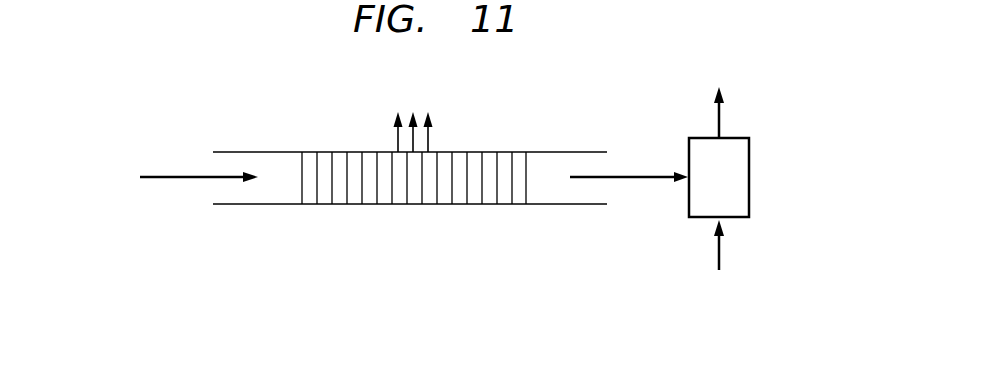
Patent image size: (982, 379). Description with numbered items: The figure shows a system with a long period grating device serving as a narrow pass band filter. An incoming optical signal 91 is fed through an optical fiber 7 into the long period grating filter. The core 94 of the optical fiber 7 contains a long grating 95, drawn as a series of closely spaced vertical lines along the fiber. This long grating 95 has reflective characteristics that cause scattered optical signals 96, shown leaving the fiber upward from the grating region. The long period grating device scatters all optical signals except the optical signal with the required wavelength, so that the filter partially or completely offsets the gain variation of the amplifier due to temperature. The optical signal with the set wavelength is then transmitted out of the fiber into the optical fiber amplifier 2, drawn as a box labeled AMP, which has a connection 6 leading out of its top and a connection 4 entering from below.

The optical fiber 7 is at (258, 136).
The core 94 is at (258, 205).
The long grating 95 is at (408, 205).
The incoming optical signal 91 is at (168, 176).
The scattered optical signals 96 is at (388, 99).
The optical fiber amplifier 2 is at (750, 177).
The amplifier output 6 is at (722, 116).
The pump light input 4 is at (720, 253).